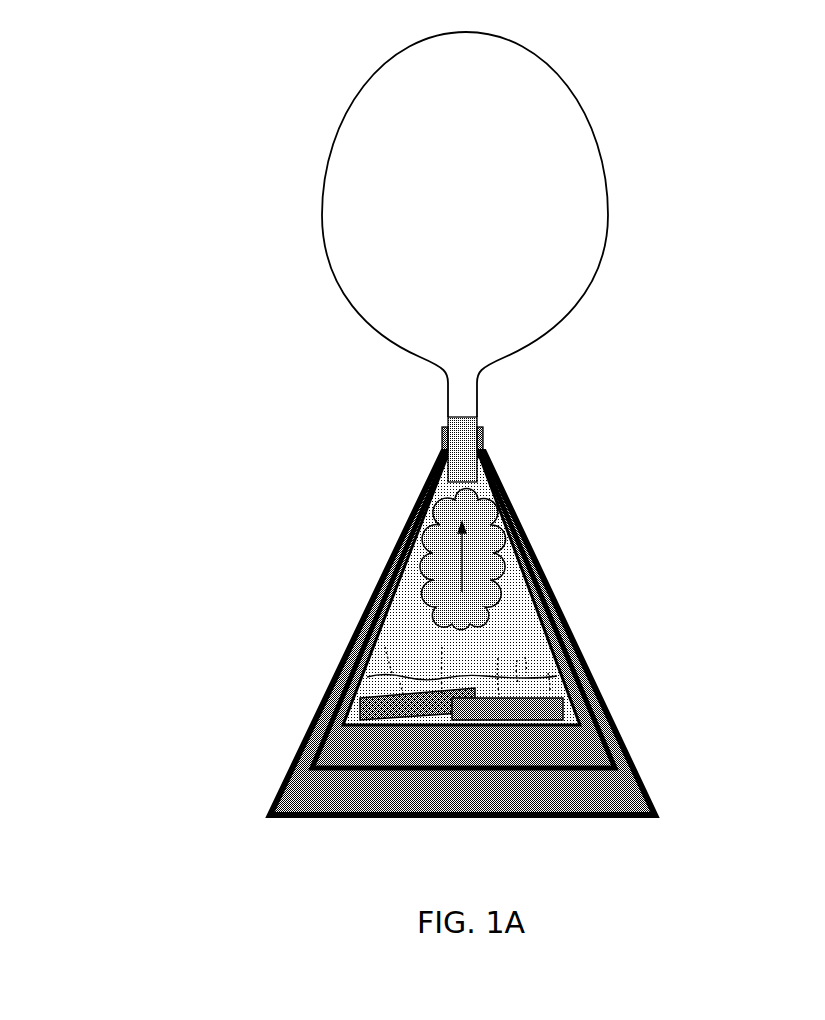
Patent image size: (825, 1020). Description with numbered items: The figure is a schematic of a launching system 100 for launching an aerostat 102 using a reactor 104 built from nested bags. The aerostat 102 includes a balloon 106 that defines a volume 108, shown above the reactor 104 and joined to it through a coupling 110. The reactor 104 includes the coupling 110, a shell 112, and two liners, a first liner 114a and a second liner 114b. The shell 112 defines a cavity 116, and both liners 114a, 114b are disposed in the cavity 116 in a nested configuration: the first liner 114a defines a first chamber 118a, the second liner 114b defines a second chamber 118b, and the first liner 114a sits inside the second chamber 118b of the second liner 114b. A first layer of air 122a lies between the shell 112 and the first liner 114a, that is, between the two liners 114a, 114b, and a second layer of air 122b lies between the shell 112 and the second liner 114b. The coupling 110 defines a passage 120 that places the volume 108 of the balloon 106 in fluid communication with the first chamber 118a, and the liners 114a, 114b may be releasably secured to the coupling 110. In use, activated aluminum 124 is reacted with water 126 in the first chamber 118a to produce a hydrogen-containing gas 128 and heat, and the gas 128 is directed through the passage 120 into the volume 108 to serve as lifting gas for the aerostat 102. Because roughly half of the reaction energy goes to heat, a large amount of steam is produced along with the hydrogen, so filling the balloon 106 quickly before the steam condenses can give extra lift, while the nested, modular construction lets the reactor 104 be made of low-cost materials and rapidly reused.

The launching system 100 is at (282, 87).
The aerostat 102 is at (708, 17).
The reactor 104 is at (178, 433).
The balloon 106 is at (605, 147).
The volume 108 is at (493, 216).
The coupling 110 is at (485, 432).
The shell 112 is at (645, 782).
The first liner 114a is at (355, 732).
The second liner 114b is at (593, 773).
The cavity 116 is at (372, 793).
The first chamber 118a is at (410, 608).
The second chamber 118b is at (580, 735).
The passage 120 is at (462, 433).
The first layer of air 122a is at (461, 759).
The second layer of air 122b is at (471, 805).
The activated aluminum 124 is at (498, 732).
The water 126 is at (517, 687).
The hydrogen-containing gas 128 is at (490, 547).